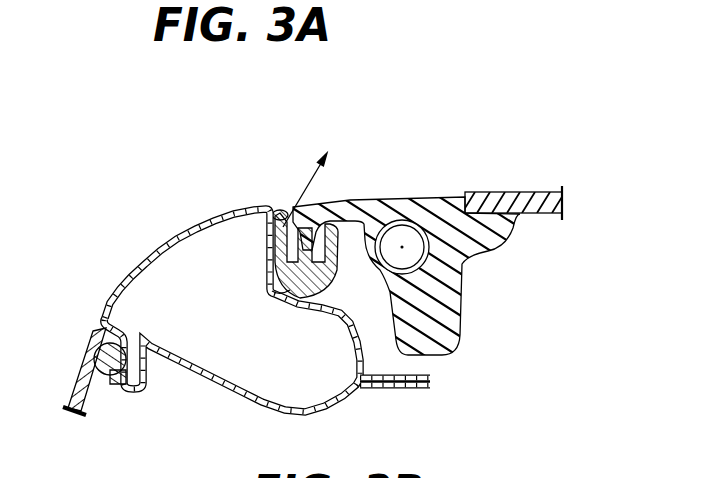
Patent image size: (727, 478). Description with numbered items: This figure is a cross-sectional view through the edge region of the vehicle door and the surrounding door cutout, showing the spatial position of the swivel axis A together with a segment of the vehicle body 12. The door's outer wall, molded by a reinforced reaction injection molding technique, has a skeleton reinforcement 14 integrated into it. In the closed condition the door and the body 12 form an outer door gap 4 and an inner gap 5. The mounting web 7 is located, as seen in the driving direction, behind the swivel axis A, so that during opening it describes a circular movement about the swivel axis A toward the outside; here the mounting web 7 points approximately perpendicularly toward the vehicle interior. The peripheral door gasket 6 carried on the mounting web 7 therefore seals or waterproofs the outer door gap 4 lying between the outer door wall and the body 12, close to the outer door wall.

The outer door gap 4 is at (288, 210).
The inner gap 5 is at (427, 368).
The peripheral door gasket 6 is at (318, 273).
The mounting web 7 is at (290, 272).
The vehicle body 12 is at (134, 272).
The skeleton reinforcement 14 is at (400, 245).
The swivel axis A is at (312, 175).